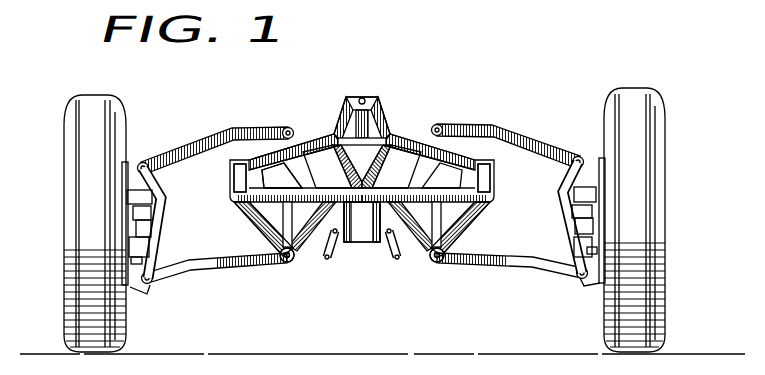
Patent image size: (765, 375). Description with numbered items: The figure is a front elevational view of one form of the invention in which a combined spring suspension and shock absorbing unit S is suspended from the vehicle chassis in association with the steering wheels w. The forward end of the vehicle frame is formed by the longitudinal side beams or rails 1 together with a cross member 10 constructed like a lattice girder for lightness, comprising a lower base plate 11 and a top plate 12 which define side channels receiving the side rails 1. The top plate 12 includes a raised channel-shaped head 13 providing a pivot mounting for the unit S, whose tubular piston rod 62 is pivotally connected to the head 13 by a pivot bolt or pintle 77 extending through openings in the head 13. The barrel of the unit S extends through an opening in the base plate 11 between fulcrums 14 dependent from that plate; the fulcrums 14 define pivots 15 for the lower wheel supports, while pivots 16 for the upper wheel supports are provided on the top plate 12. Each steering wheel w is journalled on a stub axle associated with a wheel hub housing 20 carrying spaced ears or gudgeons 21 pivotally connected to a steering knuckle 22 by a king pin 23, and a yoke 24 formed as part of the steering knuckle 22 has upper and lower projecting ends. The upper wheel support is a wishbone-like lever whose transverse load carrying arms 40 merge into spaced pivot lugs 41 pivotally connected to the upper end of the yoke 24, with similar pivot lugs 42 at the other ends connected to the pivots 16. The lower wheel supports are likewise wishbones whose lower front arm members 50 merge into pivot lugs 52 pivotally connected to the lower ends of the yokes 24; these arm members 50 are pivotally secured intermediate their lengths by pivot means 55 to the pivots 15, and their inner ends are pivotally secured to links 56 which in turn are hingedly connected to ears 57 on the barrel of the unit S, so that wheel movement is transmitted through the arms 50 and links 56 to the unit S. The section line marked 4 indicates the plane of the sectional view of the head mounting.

The steering wheel w is at (93, 168).
The longitudinal side beam or rail 1 is at (243, 190).
The section line 4 is at (393, 73).
The cross member 10 is at (337, 111).
The lower base plate 11 is at (299, 185).
The top plate 12 is at (265, 152).
The raised channel-shaped head 13 is at (380, 108).
The fulcrum 14 is at (255, 231).
The pivot 15 is at (281, 259).
The pivot 16 is at (297, 141).
The wheel hub housing 20 is at (138, 290).
The ear or gudgeon 21 is at (152, 198).
The steering knuckle 22 is at (149, 227).
The king pin 23 is at (160, 182).
The yoke 24 is at (158, 213).
The transverse load carrying arm 40 is at (206, 139).
The pivot lug 41 is at (144, 162).
The pivot lug 42 is at (290, 127).
The lower front arm member 50 is at (240, 268).
The pivot lug 52 is at (158, 285).
The pivot means 55 is at (297, 270).
The link 56 is at (394, 256).
The ear 57 is at (340, 245).
The tubular piston rod 62 is at (368, 126).
The pivot bolt or pintle 77 is at (366, 101).
The spring suspension and shock absorbing unit S is at (370, 152).